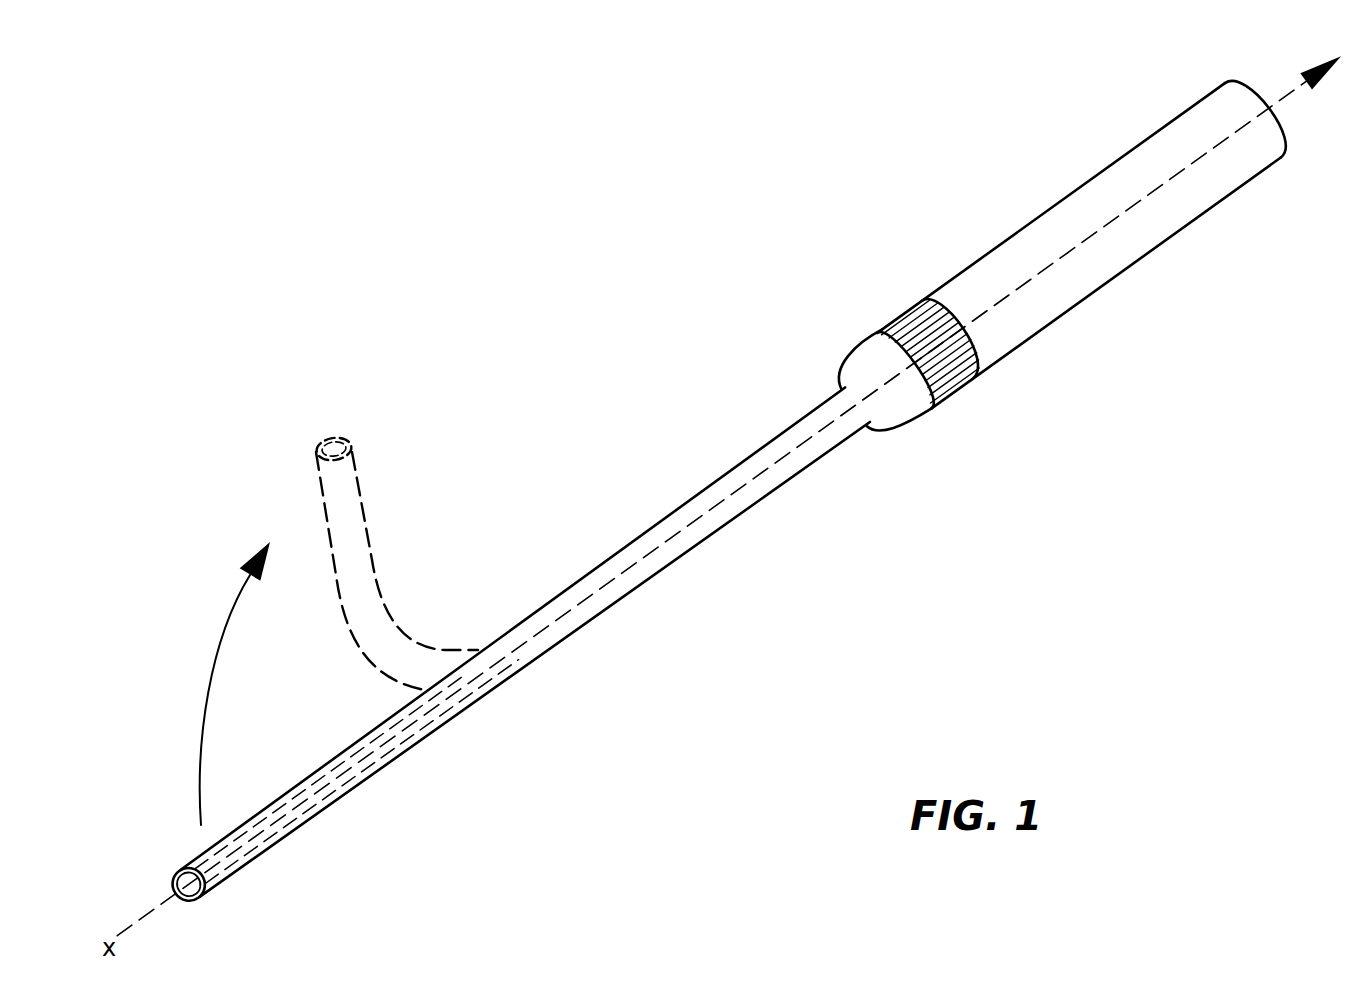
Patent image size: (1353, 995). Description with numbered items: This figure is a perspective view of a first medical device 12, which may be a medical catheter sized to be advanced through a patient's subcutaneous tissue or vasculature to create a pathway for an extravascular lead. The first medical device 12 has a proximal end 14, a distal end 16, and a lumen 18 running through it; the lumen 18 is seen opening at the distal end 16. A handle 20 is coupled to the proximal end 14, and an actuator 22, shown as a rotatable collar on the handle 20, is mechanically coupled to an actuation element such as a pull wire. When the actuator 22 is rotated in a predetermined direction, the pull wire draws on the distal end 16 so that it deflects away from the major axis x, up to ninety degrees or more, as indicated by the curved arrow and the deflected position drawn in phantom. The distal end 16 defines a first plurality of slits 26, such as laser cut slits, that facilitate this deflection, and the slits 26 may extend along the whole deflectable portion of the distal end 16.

The first medical device 12 is at (733, 563).
The proximal end 14 is at (872, 424).
The distal end 16 is at (316, 816).
The lumen 18 is at (197, 880).
The handle 20 is at (1113, 282).
The actuator 22 is at (962, 380).
The first plurality of slits 26 is at (405, 752).